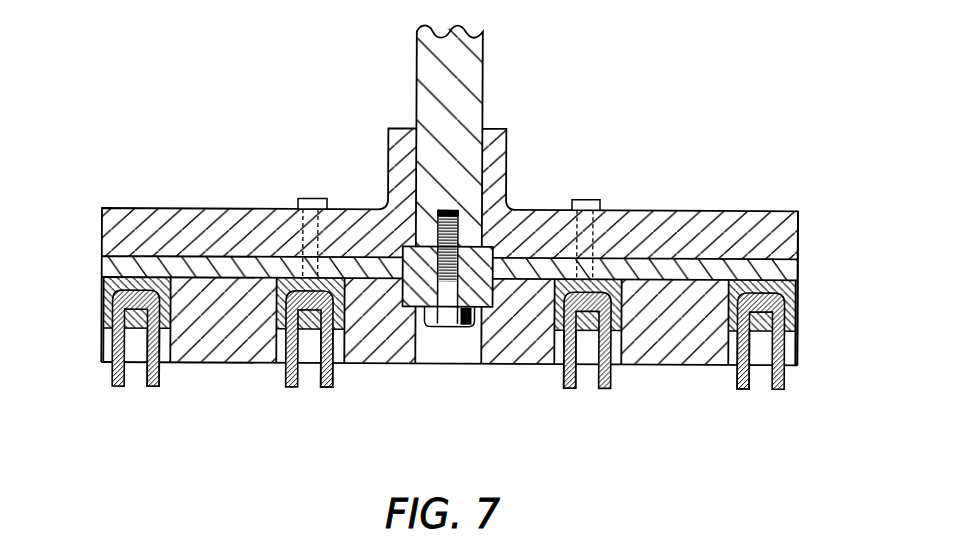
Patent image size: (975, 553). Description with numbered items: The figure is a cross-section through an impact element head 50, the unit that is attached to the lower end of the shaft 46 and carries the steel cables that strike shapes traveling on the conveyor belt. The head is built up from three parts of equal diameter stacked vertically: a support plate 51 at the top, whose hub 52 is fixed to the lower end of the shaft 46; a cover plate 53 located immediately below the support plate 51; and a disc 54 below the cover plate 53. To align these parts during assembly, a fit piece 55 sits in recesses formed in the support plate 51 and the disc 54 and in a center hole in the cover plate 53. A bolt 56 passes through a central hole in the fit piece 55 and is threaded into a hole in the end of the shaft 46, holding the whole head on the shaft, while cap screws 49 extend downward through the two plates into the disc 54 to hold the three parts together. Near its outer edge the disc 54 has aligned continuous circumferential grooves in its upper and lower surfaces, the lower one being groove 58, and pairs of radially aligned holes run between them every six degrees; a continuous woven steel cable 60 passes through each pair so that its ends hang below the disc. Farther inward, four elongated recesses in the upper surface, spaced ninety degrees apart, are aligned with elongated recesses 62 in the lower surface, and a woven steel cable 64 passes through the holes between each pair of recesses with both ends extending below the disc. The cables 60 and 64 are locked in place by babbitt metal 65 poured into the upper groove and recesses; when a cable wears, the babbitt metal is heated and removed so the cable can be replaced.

The shaft 46 is at (427, 62).
The cap screws 49 is at (317, 197).
The impact element head 50 is at (800, 243).
The support plate 51 is at (733, 218).
The hub 52 is at (494, 131).
The cover plate 53 is at (103, 268).
The disc 54 is at (222, 350).
The fit piece 55 is at (484, 296).
The bolt 56 is at (445, 315).
The circumferential groove 58 is at (139, 365).
The woven steel cable 60 is at (156, 390).
The elongated recesses 62 is at (310, 355).
The woven steel cable 64 is at (335, 383).
The babbitt metal 65 is at (287, 281).